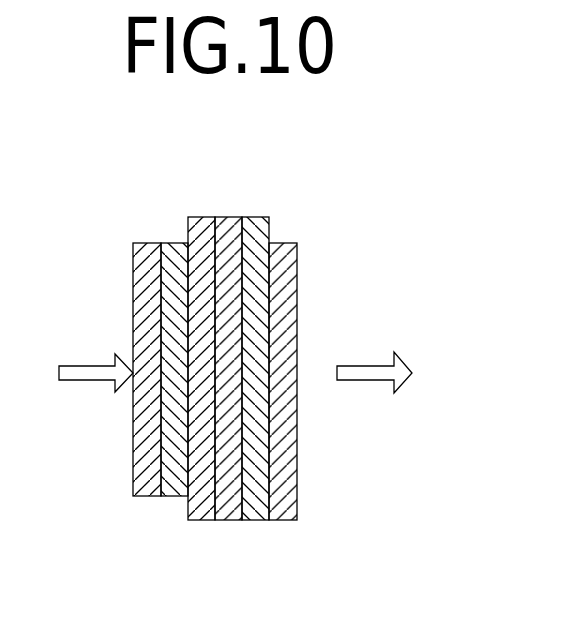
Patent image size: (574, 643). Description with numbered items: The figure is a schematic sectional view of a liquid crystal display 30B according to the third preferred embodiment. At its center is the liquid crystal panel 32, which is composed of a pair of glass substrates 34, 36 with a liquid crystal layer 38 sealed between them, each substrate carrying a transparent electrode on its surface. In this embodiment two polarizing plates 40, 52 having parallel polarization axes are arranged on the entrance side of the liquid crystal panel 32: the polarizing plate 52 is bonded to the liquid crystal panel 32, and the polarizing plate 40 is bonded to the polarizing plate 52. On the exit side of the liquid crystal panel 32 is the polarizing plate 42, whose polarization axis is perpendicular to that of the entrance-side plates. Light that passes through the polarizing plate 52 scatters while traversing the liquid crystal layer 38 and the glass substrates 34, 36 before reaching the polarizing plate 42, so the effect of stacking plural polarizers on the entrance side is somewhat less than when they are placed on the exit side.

The liquid crystal display 30B is at (278, 209).
The liquid crystal panel 32 is at (232, 212).
The glass substrate 34 is at (190, 521).
The glass substrate 36 is at (258, 521).
The liquid crystal layer 38 is at (227, 521).
The polarizing plate 40 is at (133, 494).
The polarizing plate 42 is at (287, 521).
The polarizing plate 52 is at (170, 497).